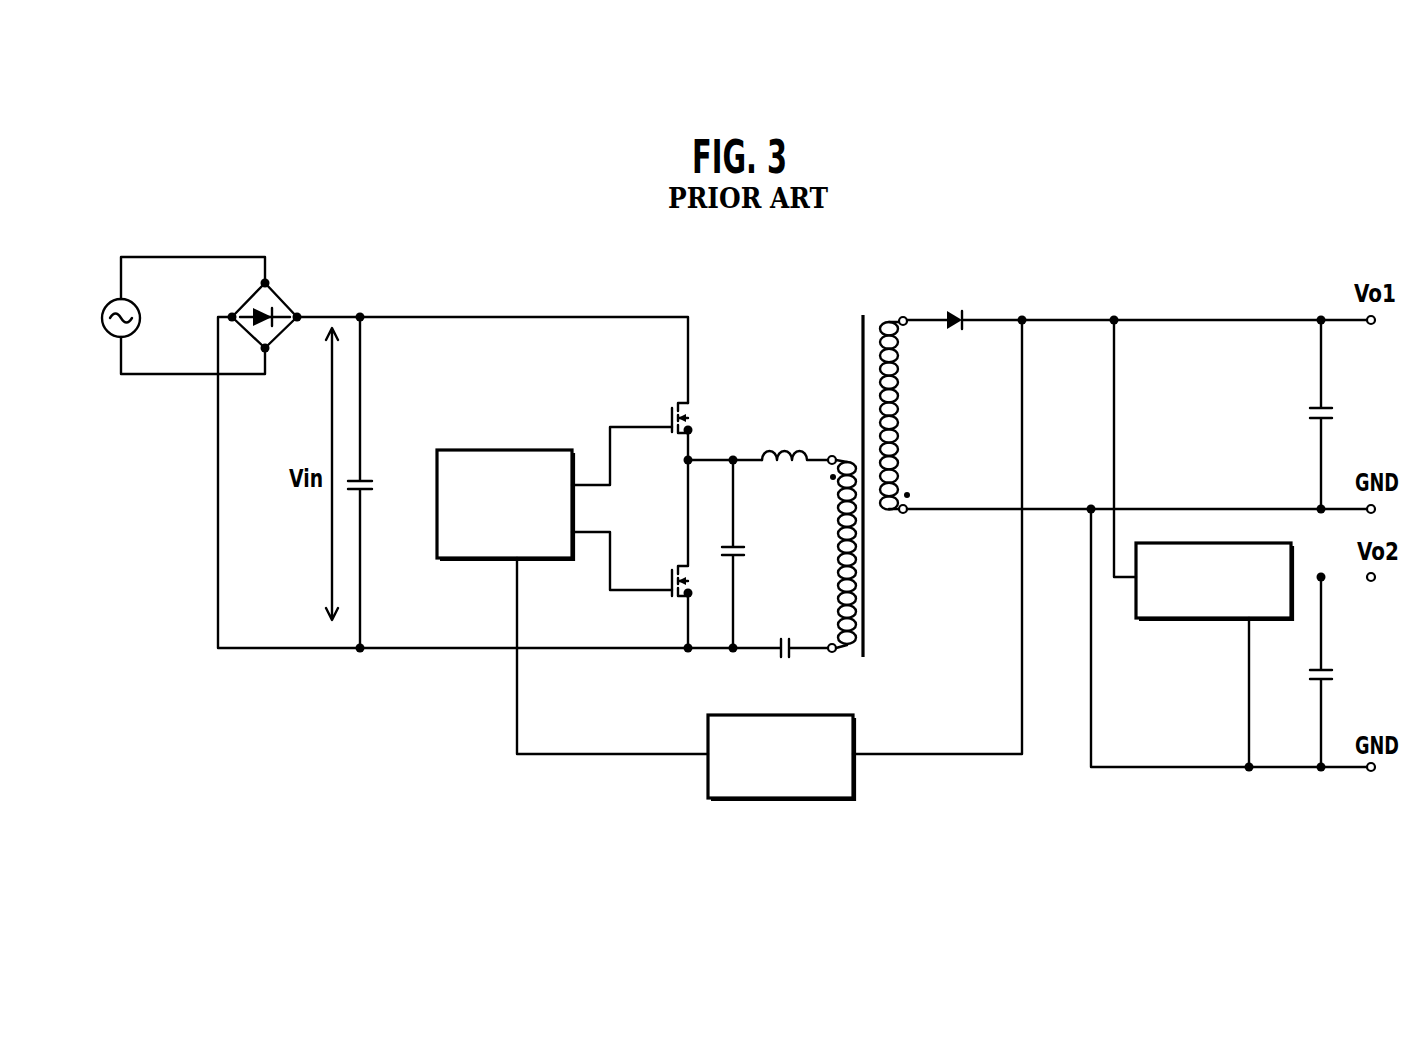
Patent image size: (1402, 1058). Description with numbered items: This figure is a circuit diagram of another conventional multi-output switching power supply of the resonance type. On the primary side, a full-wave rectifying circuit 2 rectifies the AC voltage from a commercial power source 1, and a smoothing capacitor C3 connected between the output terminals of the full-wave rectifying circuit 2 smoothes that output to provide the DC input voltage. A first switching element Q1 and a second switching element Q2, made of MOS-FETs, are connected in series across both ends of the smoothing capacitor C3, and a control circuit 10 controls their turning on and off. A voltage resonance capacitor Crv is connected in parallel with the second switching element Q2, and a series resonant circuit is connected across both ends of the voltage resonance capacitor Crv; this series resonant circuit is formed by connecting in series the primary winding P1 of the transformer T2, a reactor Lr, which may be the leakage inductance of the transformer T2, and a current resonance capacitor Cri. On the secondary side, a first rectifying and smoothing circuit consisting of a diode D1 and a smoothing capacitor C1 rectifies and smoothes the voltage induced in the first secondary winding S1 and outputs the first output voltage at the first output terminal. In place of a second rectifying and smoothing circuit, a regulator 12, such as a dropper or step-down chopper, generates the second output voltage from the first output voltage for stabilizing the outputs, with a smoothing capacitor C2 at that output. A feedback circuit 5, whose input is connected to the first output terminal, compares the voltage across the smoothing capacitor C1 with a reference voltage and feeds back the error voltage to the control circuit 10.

The commercial power source 1 is at (102, 318).
The full-wave rectifying circuit 2 is at (274, 299).
The feedback circuit 5 is at (855, 773).
The control circuit 10 is at (497, 450).
The regulator 12 is at (1227, 620).
The smoothing capacitor C3 is at (374, 482).
The first switching element Q1 is at (697, 431).
The second switching element Q2 is at (697, 554).
The reactor Lr is at (795, 438).
The voltage resonance capacitor Crv is at (756, 554).
The current resonance capacitor Cri is at (780, 665).
The transformer T2 is at (869, 470).
The primary winding P1 is at (823, 553).
The first secondary winding S1 is at (914, 415).
The diode D1 is at (964, 306).
The smoothing capacitor C1 is at (1339, 414).
The smoothing capacitor C2 is at (1339, 672).